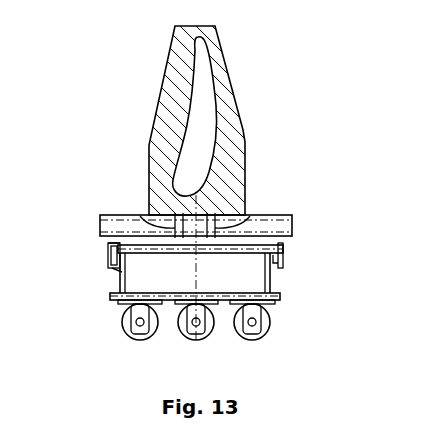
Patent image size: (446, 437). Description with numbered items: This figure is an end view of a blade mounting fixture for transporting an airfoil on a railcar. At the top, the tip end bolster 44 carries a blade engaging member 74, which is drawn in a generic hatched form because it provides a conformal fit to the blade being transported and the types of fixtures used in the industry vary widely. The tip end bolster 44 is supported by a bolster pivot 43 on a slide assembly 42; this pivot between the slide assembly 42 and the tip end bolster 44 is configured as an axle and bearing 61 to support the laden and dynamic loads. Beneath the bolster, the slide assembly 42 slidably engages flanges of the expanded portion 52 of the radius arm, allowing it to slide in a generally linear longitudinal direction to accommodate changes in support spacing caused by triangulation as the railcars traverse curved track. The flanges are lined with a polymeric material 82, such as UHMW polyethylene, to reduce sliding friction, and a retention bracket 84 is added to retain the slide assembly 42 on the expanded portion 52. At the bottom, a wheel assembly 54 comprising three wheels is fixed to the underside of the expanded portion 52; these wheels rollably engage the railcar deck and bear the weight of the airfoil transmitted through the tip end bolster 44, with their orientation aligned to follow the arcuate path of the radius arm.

The blade engaging member 74 is at (230, 78).
The bolster pivot 43 is at (250, 215).
The axle and bearing 61 is at (148, 218).
The tip end bolster 44 is at (292, 222).
The slide assembly 42 is at (283, 248).
The retention bracket 84 is at (108, 257).
The polymeric material 82 is at (113, 246).
The expanded portion 52 is at (272, 273).
The wheel assembly 54 is at (150, 338).